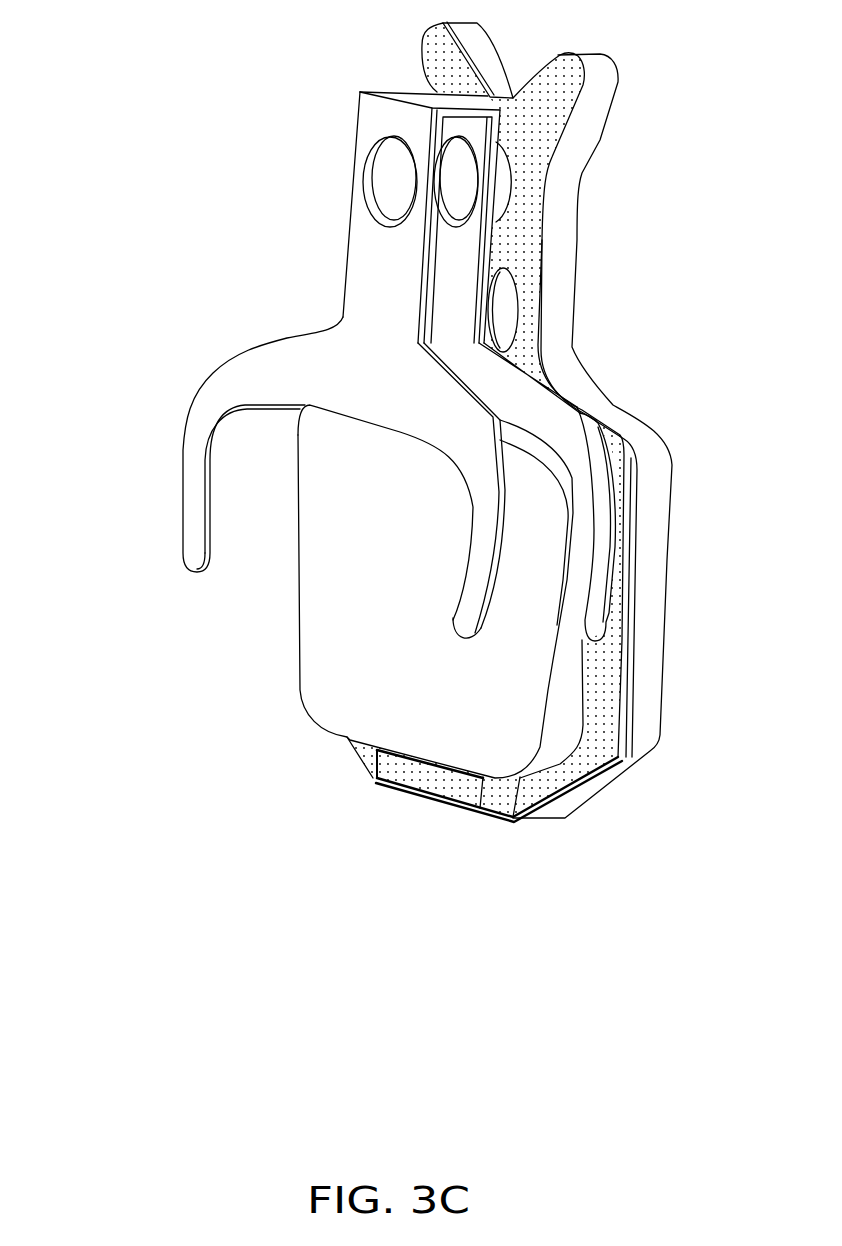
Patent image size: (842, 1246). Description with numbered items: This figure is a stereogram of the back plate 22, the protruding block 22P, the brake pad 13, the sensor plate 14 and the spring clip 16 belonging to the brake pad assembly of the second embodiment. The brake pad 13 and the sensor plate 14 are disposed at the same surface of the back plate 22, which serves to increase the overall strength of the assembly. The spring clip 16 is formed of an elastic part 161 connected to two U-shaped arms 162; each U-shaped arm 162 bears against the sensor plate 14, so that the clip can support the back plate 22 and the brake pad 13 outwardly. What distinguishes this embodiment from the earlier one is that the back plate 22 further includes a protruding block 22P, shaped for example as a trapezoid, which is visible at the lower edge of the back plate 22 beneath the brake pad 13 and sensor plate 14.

The brake pad 13 is at (327, 665).
The sensor plate 14 is at (553, 82).
The spring clip 16 is at (409, 366).
The elastic part 161 is at (383, 122).
The U-shaped arm 162 is at (193, 483).
The back plate 22 is at (640, 740).
The protruding block 22P is at (457, 807).